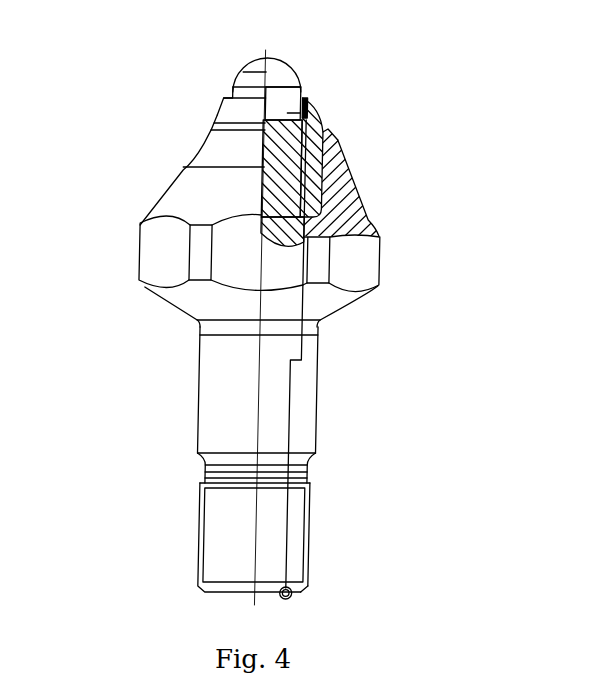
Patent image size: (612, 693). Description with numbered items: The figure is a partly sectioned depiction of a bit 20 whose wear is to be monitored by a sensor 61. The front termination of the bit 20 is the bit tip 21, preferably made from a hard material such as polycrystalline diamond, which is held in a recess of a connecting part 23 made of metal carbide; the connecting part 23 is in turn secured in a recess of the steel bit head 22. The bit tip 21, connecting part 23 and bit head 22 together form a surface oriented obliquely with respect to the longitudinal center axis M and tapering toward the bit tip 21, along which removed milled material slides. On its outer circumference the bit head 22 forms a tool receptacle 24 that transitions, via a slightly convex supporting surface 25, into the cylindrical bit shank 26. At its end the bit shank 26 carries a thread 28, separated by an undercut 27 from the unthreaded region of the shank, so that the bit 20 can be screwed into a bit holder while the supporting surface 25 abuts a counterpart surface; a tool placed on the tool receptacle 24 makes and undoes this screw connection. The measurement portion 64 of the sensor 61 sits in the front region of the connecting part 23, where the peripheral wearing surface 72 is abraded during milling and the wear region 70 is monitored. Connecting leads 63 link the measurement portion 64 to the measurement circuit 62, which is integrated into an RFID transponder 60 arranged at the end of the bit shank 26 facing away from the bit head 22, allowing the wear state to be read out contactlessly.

The bit 20 is at (133, 98).
The bit tip 21 is at (241, 74).
The bit head 22 is at (195, 163).
The connecting part 23 is at (228, 110).
The tool receptacle 24 is at (160, 250).
The supporting surface 25 is at (188, 298).
The bit shank 26 is at (223, 382).
The undercut 27 is at (203, 472).
The thread 28 is at (223, 520).
The longitudinal center axis M is at (252, 497).
The RFID transponder 60 is at (300, 597).
The sensor 61 is at (333, 143).
The measurement circuit 62 is at (300, 588).
The connecting leads 63 is at (290, 415).
The measurement portion 64 is at (310, 107).
The wear region 70 is at (270, 153).
The wearing surface 72 is at (305, 98).